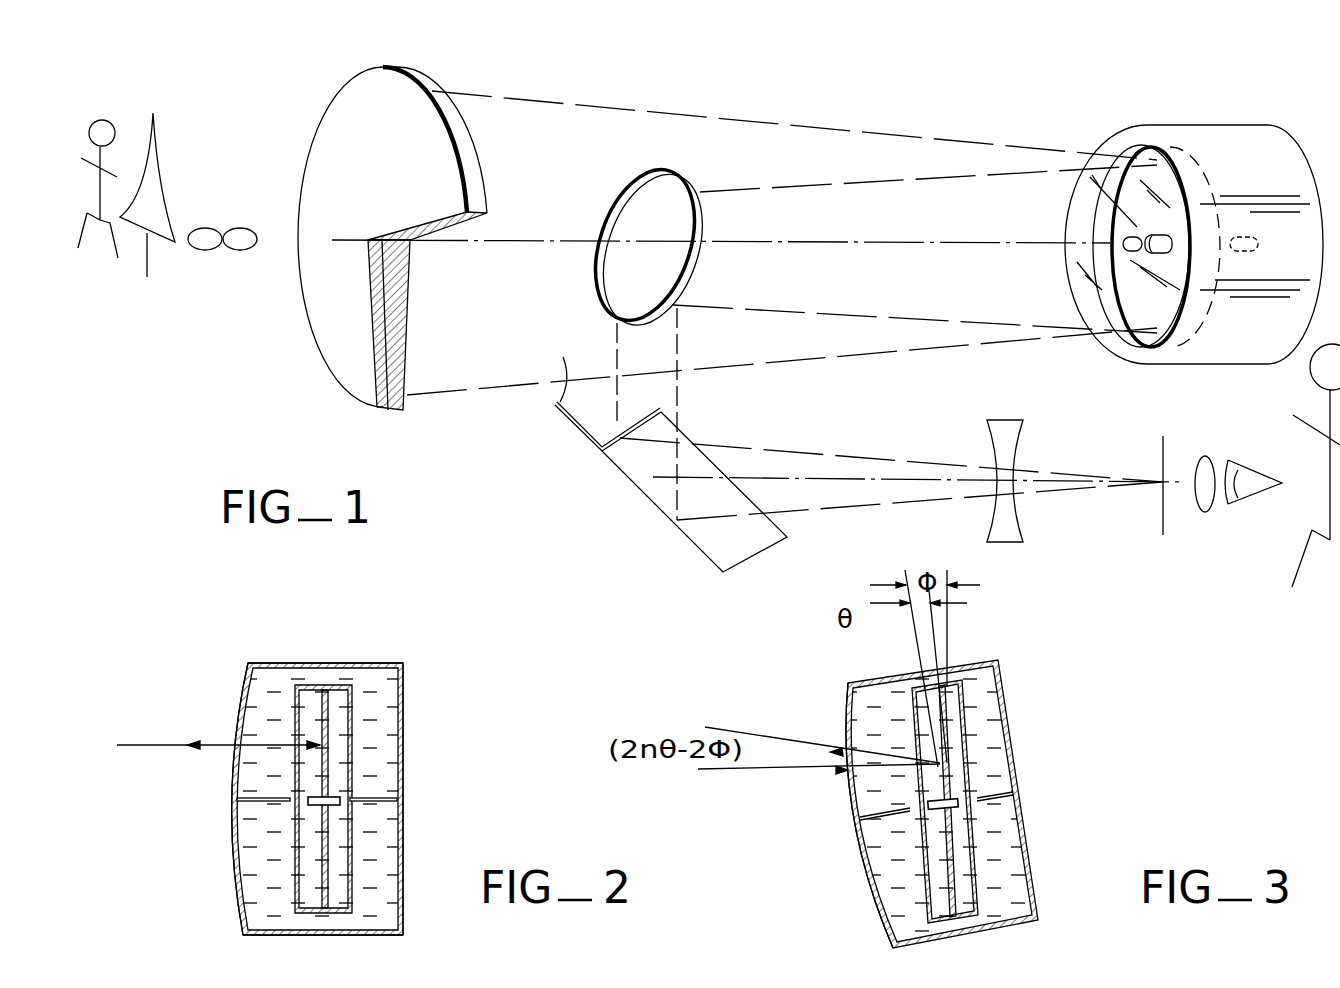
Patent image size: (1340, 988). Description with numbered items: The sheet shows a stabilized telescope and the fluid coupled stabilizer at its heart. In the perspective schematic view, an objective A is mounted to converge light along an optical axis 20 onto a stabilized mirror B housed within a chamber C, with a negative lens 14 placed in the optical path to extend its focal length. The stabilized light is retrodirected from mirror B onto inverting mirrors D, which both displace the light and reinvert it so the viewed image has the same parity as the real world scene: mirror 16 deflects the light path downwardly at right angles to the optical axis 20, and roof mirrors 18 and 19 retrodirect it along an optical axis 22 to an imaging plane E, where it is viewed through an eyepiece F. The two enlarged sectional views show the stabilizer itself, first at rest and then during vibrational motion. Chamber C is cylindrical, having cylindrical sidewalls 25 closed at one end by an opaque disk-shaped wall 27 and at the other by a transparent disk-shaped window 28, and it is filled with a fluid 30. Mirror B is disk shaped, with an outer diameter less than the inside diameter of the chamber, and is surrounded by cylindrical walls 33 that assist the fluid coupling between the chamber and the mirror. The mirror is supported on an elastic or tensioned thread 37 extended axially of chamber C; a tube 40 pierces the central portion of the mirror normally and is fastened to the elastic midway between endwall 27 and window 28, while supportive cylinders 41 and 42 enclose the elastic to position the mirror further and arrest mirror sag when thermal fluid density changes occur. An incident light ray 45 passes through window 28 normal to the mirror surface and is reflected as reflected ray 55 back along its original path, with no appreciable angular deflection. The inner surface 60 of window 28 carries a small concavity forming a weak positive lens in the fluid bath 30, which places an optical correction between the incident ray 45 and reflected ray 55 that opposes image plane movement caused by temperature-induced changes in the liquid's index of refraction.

In FIG. 1, the objective A is at (367, 74).
In FIG. 1, the stabilized mirror B is at (1155, 152).
In FIG. 3, the stabilized mirror B is at (972, 890).
In FIG. 1, the chamber C is at (1220, 126).
In FIG. 2, the chamber C is at (365, 663).
In FIG. 3, the chamber C is at (1013, 744).
In FIG. 1, the inverting mirrors D is at (610, 317).
In FIG. 1, the imaging plane E is at (1163, 517).
In FIG. 1, the eyepiece F is at (1199, 511).
In FIG. 1, the negative lens 14 is at (1003, 422).
In FIG. 1, the mirror 16 is at (643, 193).
In FIG. 1, the roof mirror 18 is at (588, 447).
In FIG. 1, the roof mirror 19 is at (657, 492).
In FIG. 1, the optical axis 20 is at (563, 238).
In FIG. 1, the optical axis 22 is at (907, 480).
In FIG. 2, the cylindrical sidewalls 25 is at (323, 663).
In FIG. 2, the opaque disk shaped wall 27 is at (397, 788).
In FIG. 2, the transparent disk shaped window 28 is at (237, 870).
In FIG. 3, the transparent disk shaped window 28 is at (868, 877).
In FIG. 2, the fluid 30 is at (378, 705).
In FIG. 2, the cylindrical walls 33 is at (340, 915).
In FIG. 2, the elastic thread 37 is at (343, 803).
In FIG. 3, the elastic thread 37 is at (965, 806).
In FIG. 2, the tube 40 is at (317, 805).
In FIG. 3, the tube 40 is at (957, 798).
In FIG. 2, the supportive cylinder 41 is at (243, 797).
In FIG. 2, the supportive cylinder 42 is at (400, 799).
In FIG. 2, the incident light ray 45 is at (273, 748).
In FIG. 3, the incident light ray 45 is at (786, 770).
In FIG. 2, the reflected ray 55 is at (207, 745).
In FIG. 3, the reflected ray 55 is at (812, 744).
In FIG. 2, the inner surface 60 is at (238, 860).